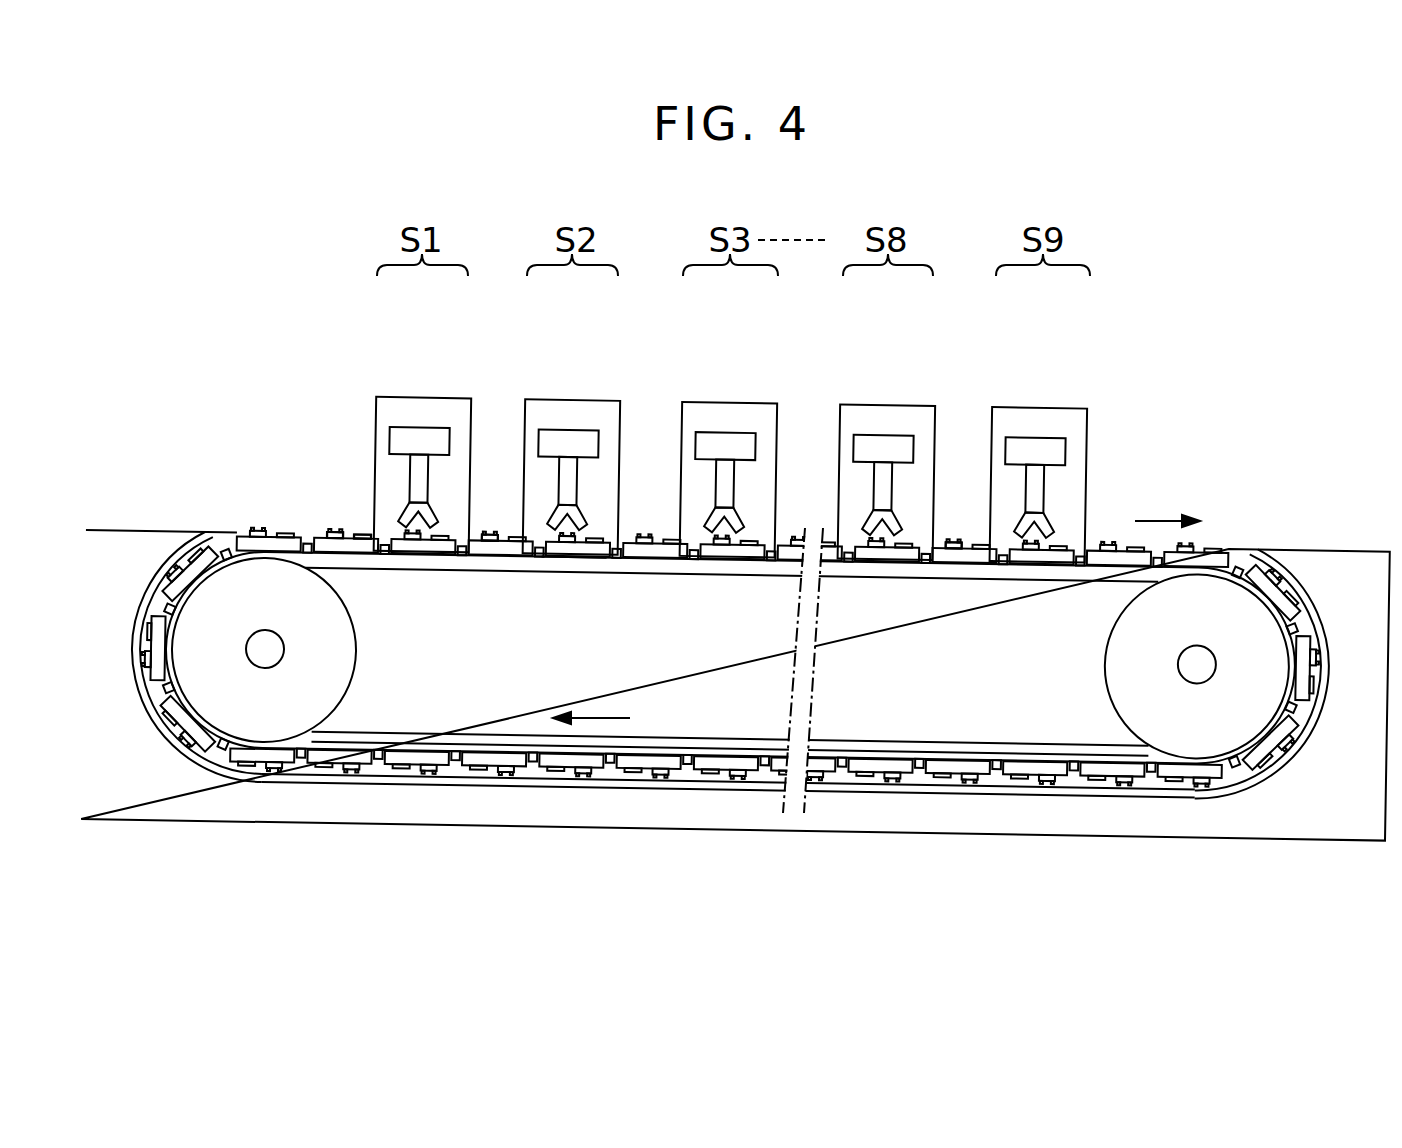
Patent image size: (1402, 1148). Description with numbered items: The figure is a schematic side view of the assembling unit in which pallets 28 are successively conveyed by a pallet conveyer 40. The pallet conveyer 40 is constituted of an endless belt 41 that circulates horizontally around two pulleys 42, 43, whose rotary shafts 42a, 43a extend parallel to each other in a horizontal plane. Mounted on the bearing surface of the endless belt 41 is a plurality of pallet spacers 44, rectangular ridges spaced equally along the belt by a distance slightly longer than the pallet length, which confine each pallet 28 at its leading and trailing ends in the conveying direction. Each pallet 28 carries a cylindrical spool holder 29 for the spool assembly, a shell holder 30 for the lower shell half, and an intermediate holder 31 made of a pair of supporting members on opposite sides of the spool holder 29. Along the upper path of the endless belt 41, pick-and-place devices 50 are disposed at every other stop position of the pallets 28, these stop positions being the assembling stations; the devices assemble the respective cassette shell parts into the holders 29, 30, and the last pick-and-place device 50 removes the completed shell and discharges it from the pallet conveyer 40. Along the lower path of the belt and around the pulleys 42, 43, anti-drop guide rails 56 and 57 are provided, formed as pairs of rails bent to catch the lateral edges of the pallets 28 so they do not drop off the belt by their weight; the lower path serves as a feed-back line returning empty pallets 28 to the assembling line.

The pallet 28 is at (307, 538).
The spool holder 29 is at (327, 533).
The shell holder 30 is at (317, 536).
The intermediate holder 31 is at (360, 533).
The pallet conveyer 40 is at (1148, 430).
The endless belt 41 is at (572, 555).
The pulley 42 is at (345, 654).
The rotary shaft 42a is at (266, 658).
The pulley 43 is at (1125, 668).
The rotary shaft 43a is at (1196, 674).
The pallet spacer 44 is at (455, 558).
The pick-and-place device 50 is at (422, 396).
The anti-drop guide rail 56 is at (690, 784).
The anti-drop guide rail 57 is at (171, 748).